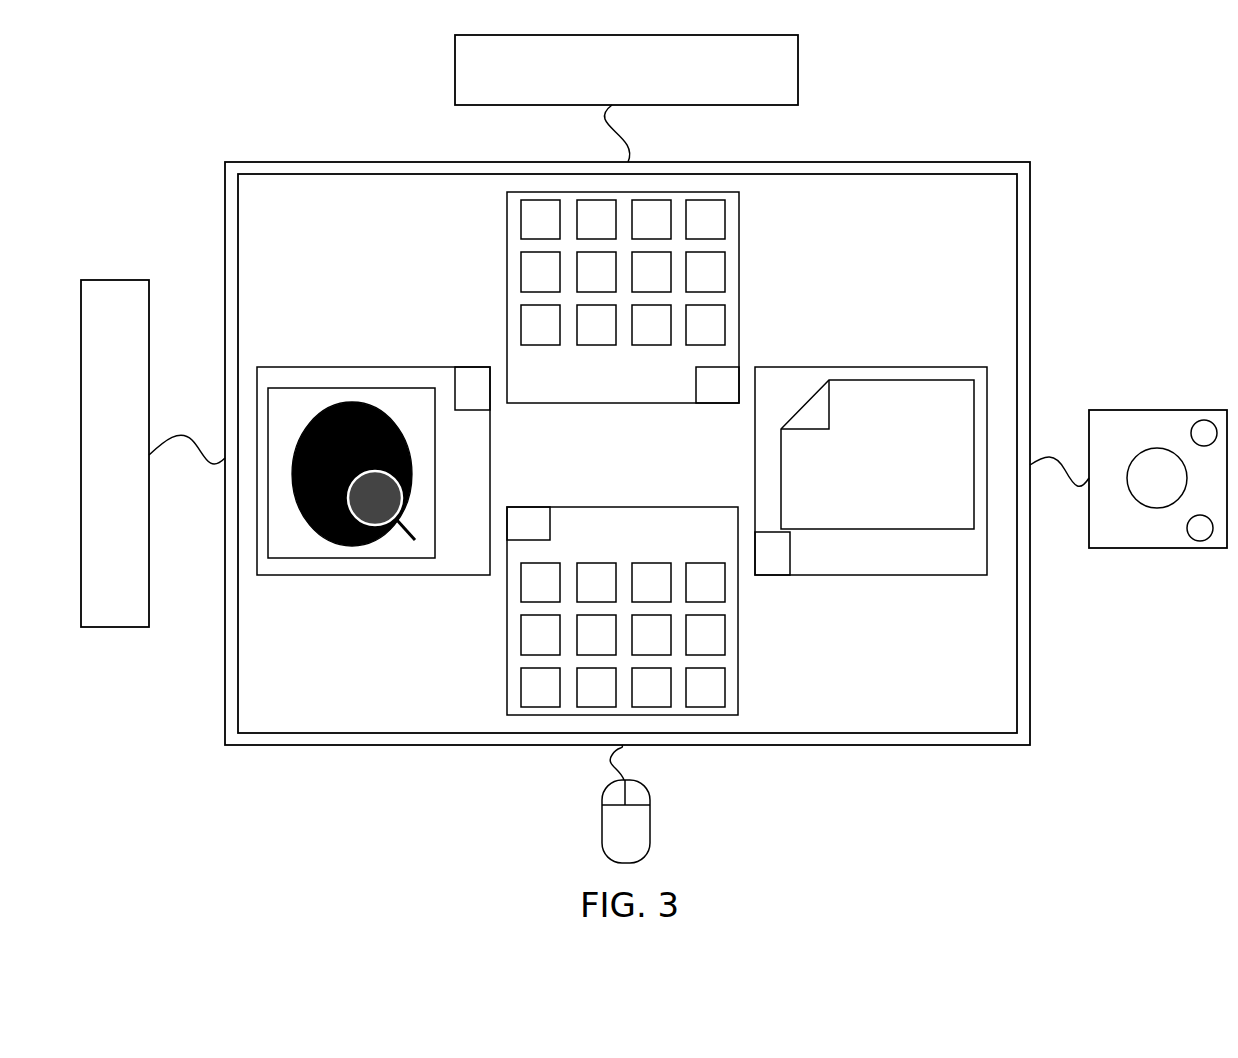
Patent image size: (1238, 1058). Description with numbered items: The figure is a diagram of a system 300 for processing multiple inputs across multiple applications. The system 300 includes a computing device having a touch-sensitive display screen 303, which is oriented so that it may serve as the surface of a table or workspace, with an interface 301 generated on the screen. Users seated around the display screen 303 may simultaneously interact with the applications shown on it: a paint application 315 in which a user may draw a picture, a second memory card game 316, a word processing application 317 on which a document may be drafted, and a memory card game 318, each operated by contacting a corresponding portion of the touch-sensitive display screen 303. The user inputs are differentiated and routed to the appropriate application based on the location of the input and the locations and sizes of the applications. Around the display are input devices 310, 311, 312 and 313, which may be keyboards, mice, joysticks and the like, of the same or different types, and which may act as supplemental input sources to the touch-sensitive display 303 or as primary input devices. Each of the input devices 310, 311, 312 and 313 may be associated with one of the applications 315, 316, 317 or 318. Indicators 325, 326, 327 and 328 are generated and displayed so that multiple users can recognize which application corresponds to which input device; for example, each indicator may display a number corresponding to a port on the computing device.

The system 300 is at (1020, 113).
The interface 301 is at (877, 247).
The touch-sensitive display screen 303 is at (1017, 210).
The input device 310 is at (115, 277).
The input device 311 is at (798, 77).
The input device 312 is at (1125, 408).
The input device 313 is at (650, 803).
The paint application 315 is at (362, 573).
The memory card game 316 is at (739, 305).
The word processing application 317 is at (860, 365).
The memory card game 318 is at (739, 650).
The indicator 325 is at (472, 363).
The indicator 326 is at (694, 385).
The indicator 327 is at (790, 562).
The indicator 328 is at (550, 524).